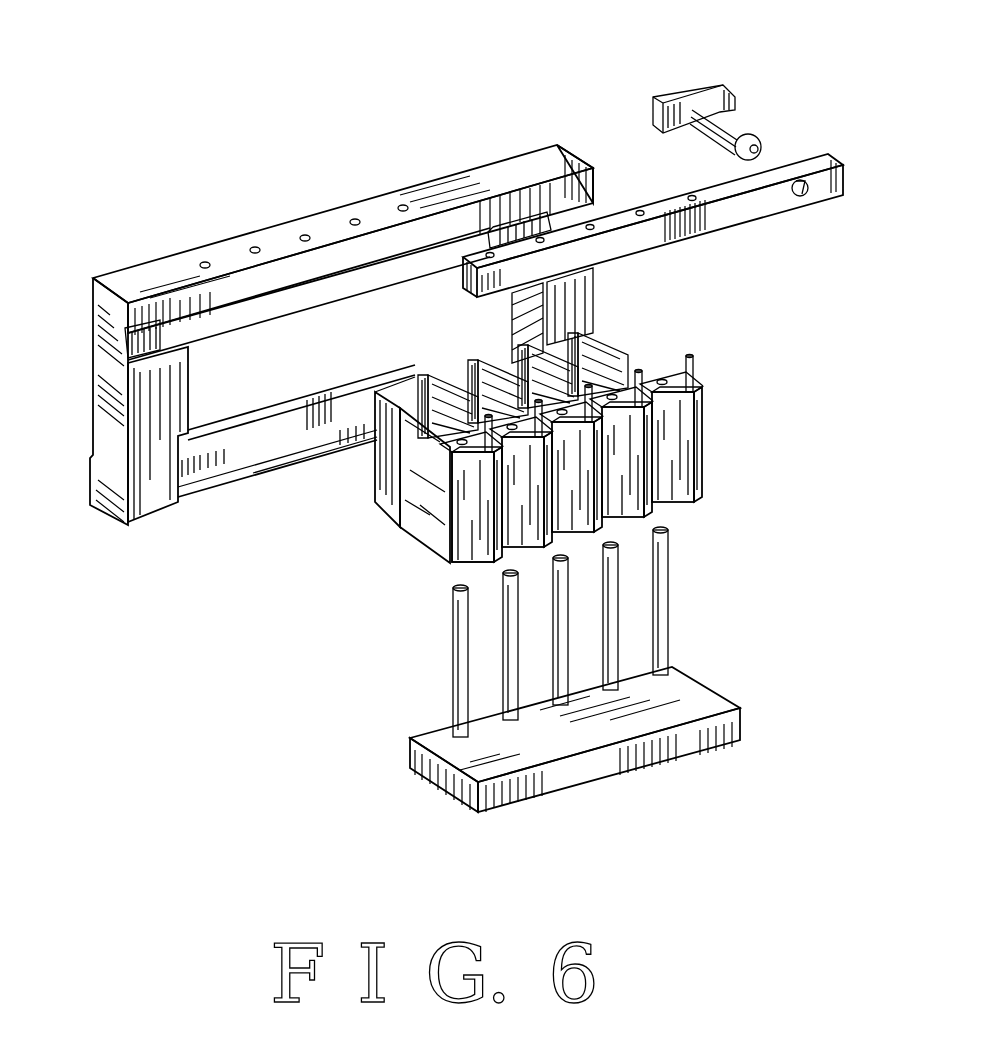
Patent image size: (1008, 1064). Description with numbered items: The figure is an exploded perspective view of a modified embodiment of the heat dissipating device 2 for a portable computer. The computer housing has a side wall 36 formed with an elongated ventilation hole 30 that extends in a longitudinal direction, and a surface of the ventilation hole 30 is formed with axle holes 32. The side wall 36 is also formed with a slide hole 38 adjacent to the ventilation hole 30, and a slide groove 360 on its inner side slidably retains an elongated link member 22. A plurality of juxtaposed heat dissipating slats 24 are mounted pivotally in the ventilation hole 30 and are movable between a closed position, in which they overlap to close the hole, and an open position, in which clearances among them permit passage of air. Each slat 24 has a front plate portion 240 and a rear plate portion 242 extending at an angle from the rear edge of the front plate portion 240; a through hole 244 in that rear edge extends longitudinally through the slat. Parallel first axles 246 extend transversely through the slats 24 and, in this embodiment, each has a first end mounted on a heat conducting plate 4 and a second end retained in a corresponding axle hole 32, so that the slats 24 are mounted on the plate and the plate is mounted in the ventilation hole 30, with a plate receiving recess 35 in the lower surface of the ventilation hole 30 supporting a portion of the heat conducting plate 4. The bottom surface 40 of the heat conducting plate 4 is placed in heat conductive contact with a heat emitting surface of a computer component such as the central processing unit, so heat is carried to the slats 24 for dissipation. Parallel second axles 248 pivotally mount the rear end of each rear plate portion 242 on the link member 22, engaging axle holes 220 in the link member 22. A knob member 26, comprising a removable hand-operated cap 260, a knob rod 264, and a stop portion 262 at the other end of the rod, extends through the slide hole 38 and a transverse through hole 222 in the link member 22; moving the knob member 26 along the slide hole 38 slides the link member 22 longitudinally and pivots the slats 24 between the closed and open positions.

The heat dissipating device 2 is at (800, 497).
The heat conducting plate 4 is at (524, 674).
The link member 22 is at (671, 231).
The heat dissipating slats 24 is at (526, 516).
The knob member 26 is at (762, 88).
The ventilation hole 30 is at (237, 378).
The axle holes 32 is at (203, 262).
The plate receiving recess 35 is at (337, 440).
The side wall 36 is at (93, 308).
The slide hole 38 is at (503, 238).
The bottom surface 40 is at (607, 780).
The axle holes 220 is at (668, 235).
The transverse through hole 222 is at (838, 205).
The front plate portion 240 is at (554, 450).
The rear plate portion 242 is at (467, 555).
The through hole 244 is at (699, 440).
The first axles 246 is at (452, 690).
The second axles 248 is at (697, 370).
The hand-operated cap 260 is at (727, 85).
The stop portion 262 is at (760, 142).
The knob rod 264 is at (697, 143).
The slide groove 360 is at (128, 385).